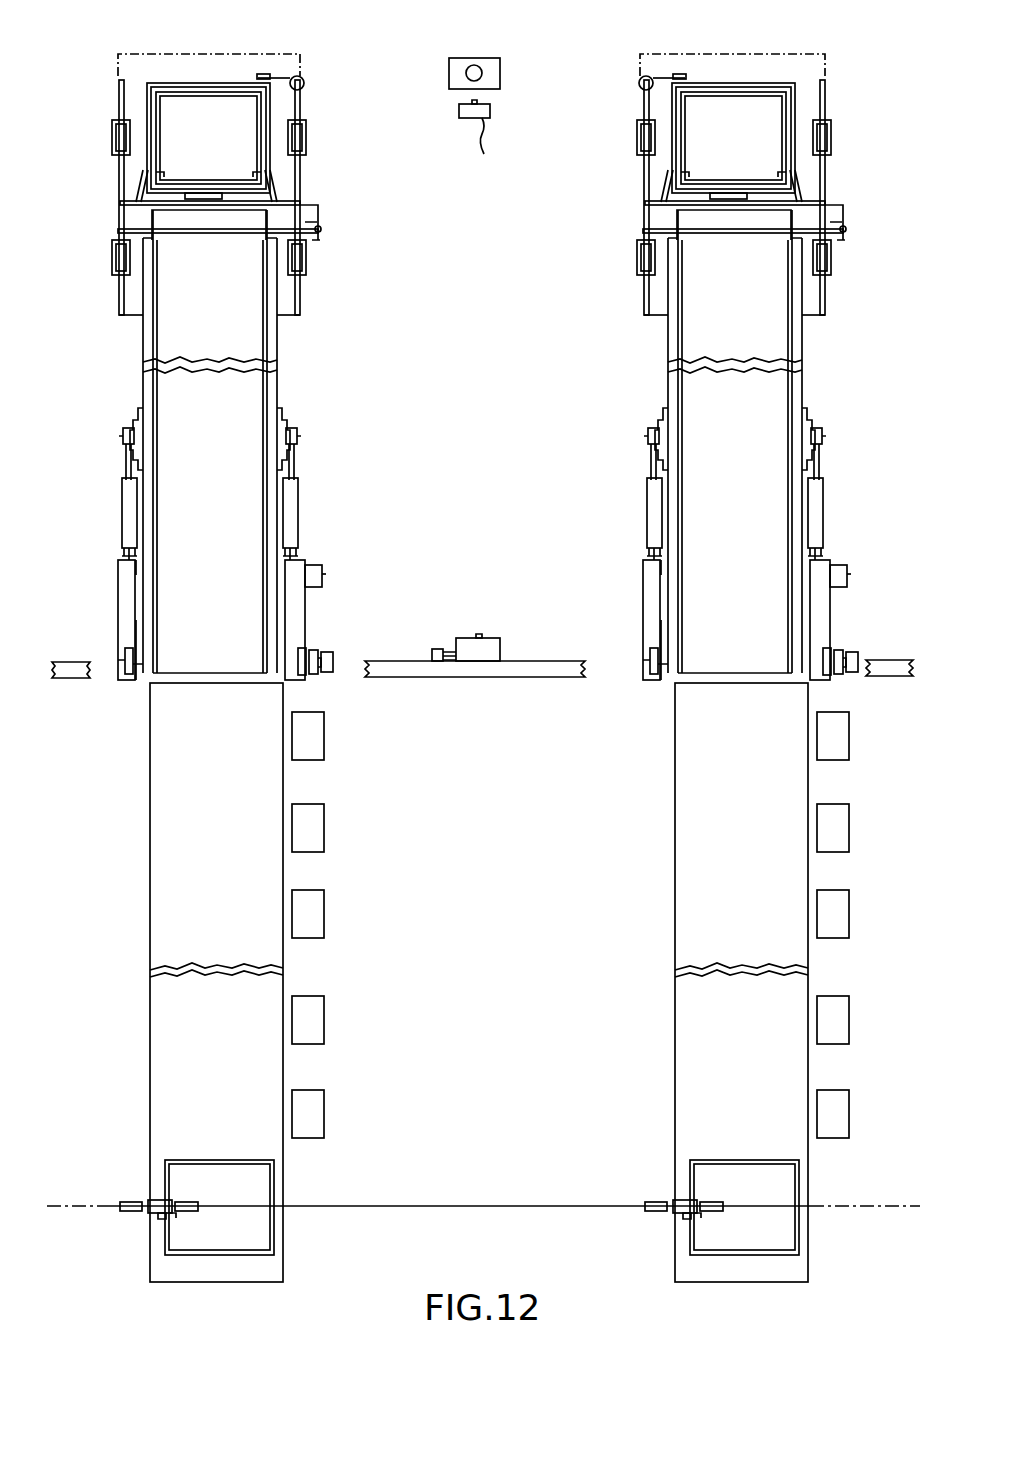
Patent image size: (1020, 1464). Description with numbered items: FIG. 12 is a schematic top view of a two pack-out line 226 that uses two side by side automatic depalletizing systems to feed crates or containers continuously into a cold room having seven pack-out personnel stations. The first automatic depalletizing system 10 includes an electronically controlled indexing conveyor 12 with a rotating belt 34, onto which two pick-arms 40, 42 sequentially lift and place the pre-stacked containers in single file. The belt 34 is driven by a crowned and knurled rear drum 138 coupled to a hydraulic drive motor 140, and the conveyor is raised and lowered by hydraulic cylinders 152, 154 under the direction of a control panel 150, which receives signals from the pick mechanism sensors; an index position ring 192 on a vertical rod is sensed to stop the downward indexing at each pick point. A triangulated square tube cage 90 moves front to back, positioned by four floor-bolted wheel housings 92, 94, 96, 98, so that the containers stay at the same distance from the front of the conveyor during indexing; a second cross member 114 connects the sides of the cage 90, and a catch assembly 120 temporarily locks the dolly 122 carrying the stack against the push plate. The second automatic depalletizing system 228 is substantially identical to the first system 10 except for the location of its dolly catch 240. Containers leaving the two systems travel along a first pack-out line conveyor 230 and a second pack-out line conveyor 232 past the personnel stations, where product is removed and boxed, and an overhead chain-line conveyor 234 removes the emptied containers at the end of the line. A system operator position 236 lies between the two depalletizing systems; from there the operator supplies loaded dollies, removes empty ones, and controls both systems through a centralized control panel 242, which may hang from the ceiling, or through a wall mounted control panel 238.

The automatic depalletizing system 10 is at (332, 452).
The indexing conveyor 12 is at (278, 392).
The rotating belt 34 is at (165, 408).
The pick-arm 40 is at (280, 185).
The pick-arm 42 is at (148, 192).
The square tube cage 90 is at (300, 303).
The wheel housing 92 is at (306, 136).
The wheel housing 94 is at (306, 258).
The wheel housing 96 is at (112, 255).
The wheel housing 98 is at (112, 135).
The second cross member 114 is at (183, 233).
The catch assembly 120 is at (300, 78).
The dolly 122 is at (175, 82).
The rear drum 138 is at (280, 652).
The hydraulic drive motor 140 is at (326, 672).
The control panel 150 is at (322, 575).
The hydraulic cylinder 152 is at (303, 515).
The hydraulic cylinder 154 is at (122, 530).
The index position ring 192 is at (320, 218).
The two pack-out line 226 is at (537, 82).
The second automatic depalletizing system 228 is at (694, 651).
The first pack-out line conveyor 230 is at (150, 907).
The second pack-out line conveyor 232 is at (693, 982).
The overhead chain-line conveyor 234 is at (410, 1206).
The system operator position 236 is at (449, 73).
The wall mounted control panel 238 is at (482, 638).
The dolly catch 240 is at (686, 55).
The centralized control panel 242 is at (466, 118).